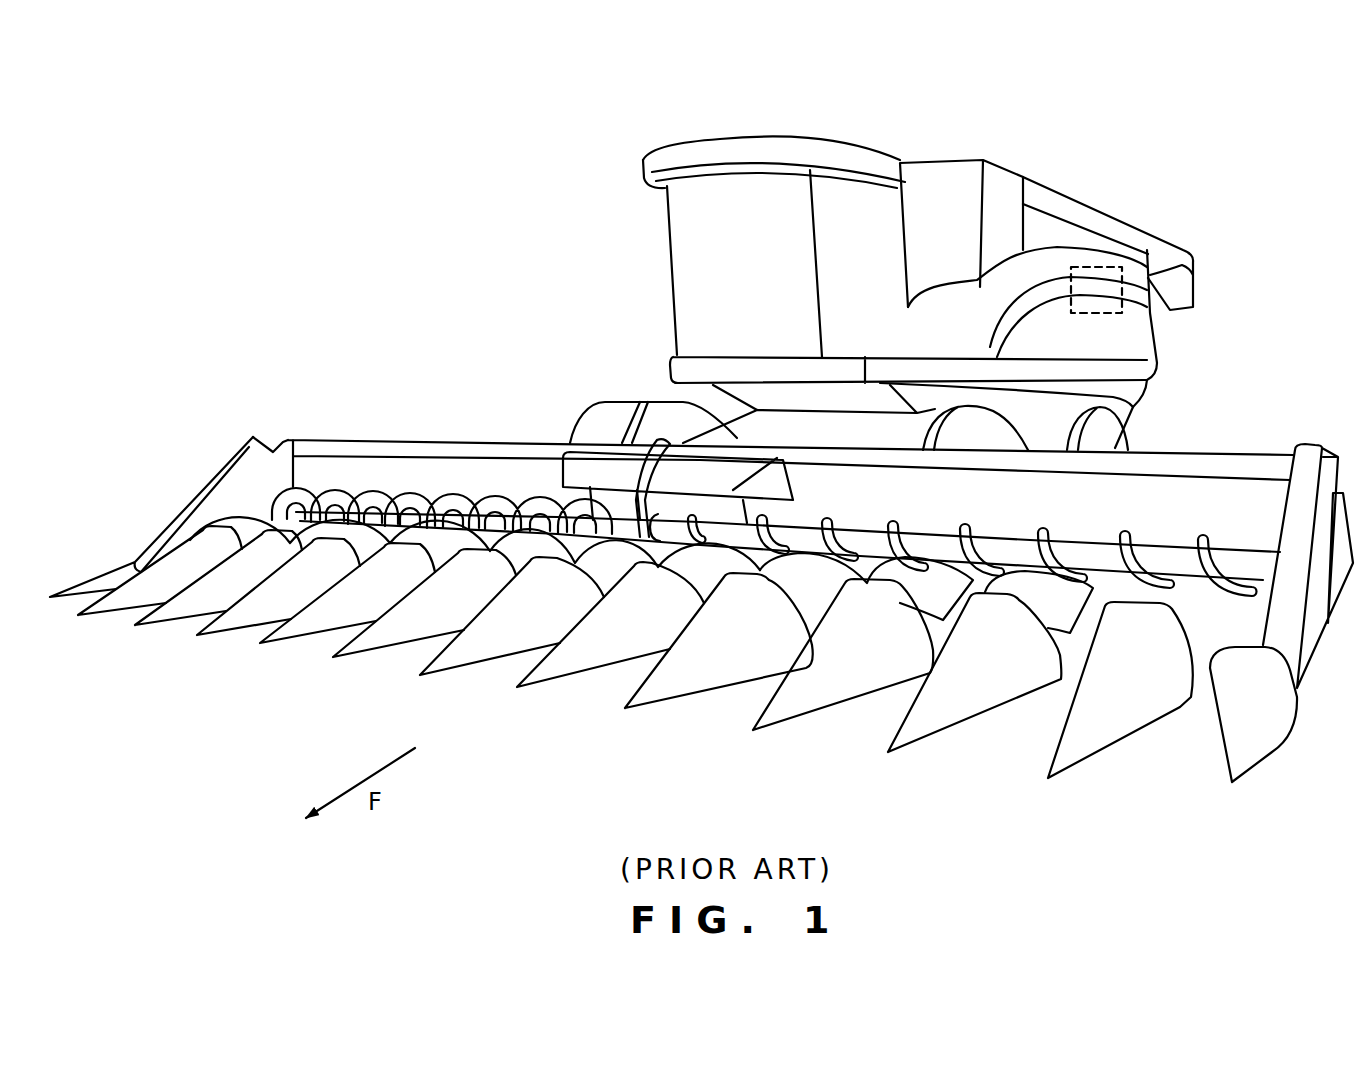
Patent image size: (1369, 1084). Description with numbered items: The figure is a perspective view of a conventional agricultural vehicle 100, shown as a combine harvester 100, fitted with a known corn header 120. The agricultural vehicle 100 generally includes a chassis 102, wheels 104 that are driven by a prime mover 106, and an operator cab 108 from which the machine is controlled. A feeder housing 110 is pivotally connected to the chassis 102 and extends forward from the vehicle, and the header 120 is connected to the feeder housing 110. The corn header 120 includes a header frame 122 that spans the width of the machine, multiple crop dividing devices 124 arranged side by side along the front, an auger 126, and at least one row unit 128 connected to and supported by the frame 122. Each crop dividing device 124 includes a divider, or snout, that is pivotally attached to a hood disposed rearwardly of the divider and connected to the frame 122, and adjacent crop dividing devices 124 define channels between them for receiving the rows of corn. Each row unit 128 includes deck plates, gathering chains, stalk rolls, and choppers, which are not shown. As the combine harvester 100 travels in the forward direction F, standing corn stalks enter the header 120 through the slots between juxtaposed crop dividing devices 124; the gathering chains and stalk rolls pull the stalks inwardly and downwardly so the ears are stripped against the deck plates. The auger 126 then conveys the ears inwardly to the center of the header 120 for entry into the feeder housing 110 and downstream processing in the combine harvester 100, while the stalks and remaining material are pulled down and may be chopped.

The agricultural vehicle 100 is at (1092, 158).
The chassis 102 is at (1160, 352).
The wheels 104 is at (592, 420).
The prime mover 106 is at (1110, 267).
The operator cab 108 is at (685, 248).
The feeder housing 110 is at (733, 435).
The header 120 is at (172, 496).
The header frame 122 is at (415, 450).
The crop dividing devices 124 is at (1060, 740).
The auger 126 is at (1163, 532).
The row unit 128 is at (681, 707).